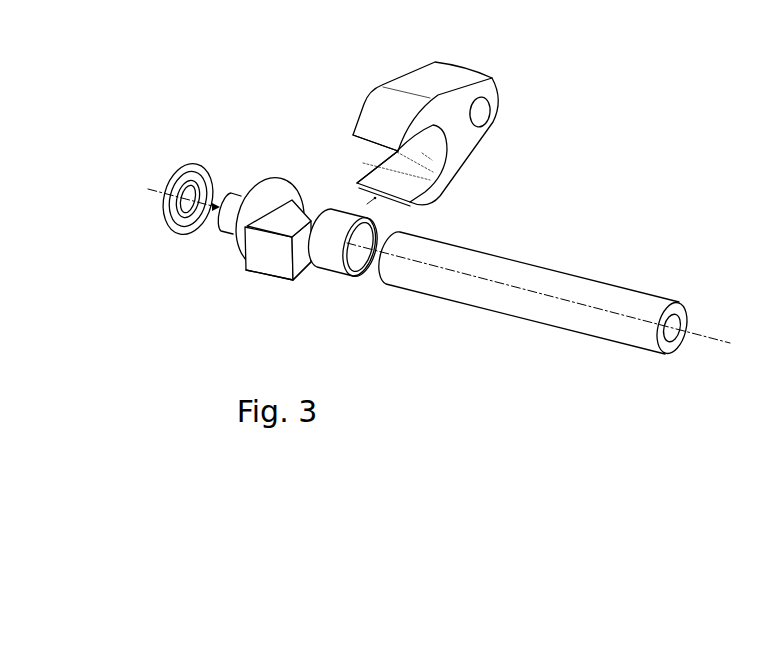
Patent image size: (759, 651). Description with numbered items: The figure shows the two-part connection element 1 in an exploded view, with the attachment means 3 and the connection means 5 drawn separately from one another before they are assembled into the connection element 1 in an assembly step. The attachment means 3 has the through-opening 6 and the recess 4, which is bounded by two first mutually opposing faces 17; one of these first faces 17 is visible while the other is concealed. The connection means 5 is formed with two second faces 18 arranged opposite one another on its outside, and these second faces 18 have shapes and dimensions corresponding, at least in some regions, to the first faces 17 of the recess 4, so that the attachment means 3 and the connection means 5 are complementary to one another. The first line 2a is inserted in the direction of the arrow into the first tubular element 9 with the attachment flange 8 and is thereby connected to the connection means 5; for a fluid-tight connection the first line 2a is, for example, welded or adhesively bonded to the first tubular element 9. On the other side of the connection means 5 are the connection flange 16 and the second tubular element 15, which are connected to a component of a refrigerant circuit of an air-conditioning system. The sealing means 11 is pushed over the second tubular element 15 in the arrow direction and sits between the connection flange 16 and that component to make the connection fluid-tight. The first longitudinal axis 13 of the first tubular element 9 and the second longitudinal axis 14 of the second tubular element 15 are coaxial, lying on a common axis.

The connection element 1 is at (510, 47).
The first line 2a is at (622, 297).
The attachment means 3 is at (440, 78).
The recess 4 is at (449, 156).
The connection means 5 is at (265, 263).
The through-opening 6 is at (482, 110).
The attachment flange 8 is at (292, 282).
The first tubular element 9 is at (345, 275).
The sealing means 11 is at (182, 232).
The first longitudinal axis 13 is at (712, 340).
The second longitudinal axis 14 is at (153, 188).
The second tubular element 15 is at (232, 223).
The connection flange 16 is at (268, 182).
The first faces 17 is at (367, 147).
The second faces 18 is at (290, 217).